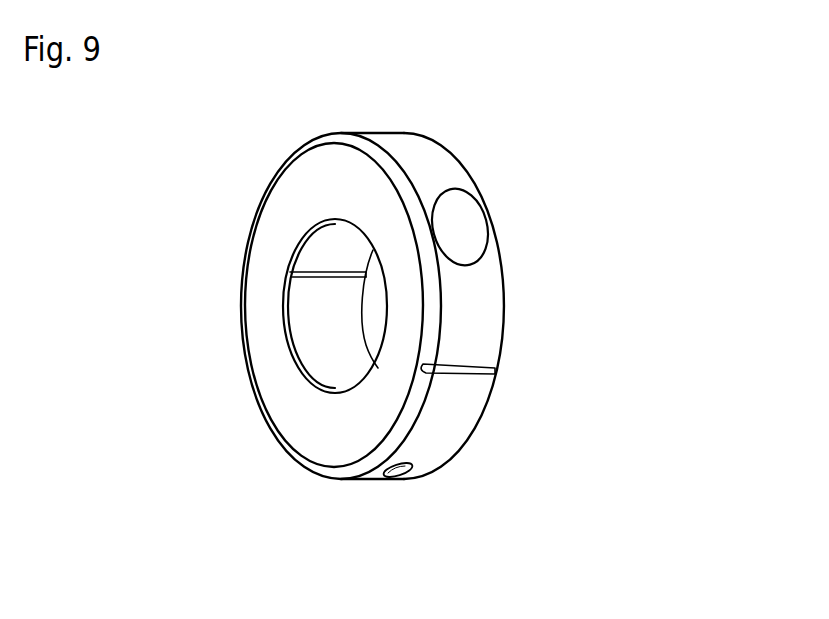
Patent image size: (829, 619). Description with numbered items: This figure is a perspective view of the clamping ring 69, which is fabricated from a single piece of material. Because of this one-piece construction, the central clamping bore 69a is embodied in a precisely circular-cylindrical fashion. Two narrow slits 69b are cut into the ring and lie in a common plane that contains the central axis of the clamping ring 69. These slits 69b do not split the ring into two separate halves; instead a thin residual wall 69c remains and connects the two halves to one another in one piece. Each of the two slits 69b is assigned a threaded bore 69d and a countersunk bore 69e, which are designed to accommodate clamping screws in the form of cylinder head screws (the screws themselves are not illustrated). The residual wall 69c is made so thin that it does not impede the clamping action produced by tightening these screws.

The clamping ring 69 is at (635, 115).
The clamping bore 69a is at (313, 345).
The narrow slits 69b is at (322, 270).
The residual wall 69c is at (283, 270).
The threaded bore 69d is at (385, 479).
The countersunk bore 69e is at (465, 225).